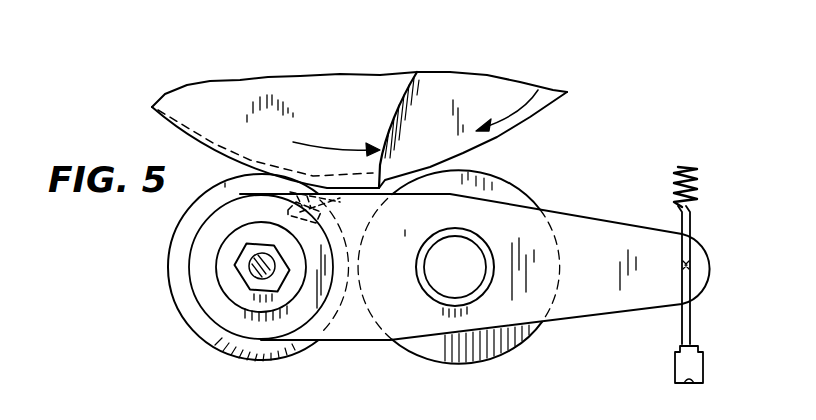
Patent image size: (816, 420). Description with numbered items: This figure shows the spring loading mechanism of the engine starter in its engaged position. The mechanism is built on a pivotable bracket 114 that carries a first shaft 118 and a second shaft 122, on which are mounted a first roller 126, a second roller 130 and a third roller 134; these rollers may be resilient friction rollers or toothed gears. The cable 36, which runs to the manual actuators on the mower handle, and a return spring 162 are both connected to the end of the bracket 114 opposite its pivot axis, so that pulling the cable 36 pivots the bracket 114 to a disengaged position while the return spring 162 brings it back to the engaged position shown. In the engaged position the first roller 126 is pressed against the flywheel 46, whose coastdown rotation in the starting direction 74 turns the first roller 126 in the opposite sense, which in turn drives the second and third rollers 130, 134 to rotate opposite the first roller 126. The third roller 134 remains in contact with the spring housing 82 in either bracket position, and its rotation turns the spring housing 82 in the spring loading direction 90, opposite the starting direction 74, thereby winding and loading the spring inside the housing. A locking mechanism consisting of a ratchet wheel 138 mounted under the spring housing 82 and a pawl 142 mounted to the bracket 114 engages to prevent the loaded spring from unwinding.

The cable 36 is at (688, 361).
The flywheel 46 is at (533, 122).
The starting direction 74 is at (521, 100).
The spring housing 82 is at (232, 92).
The spring loading direction 90 is at (345, 146).
The bracket 114 is at (600, 283).
The first shaft 118 is at (418, 262).
The second shaft 122 is at (248, 262).
The first roller 126 is at (492, 362).
The second roller 130 is at (182, 314).
The third roller 134 is at (261, 267).
The ratchet wheel 138 is at (184, 131).
The pawl 142 is at (348, 204).
The return spring 162 is at (674, 178).